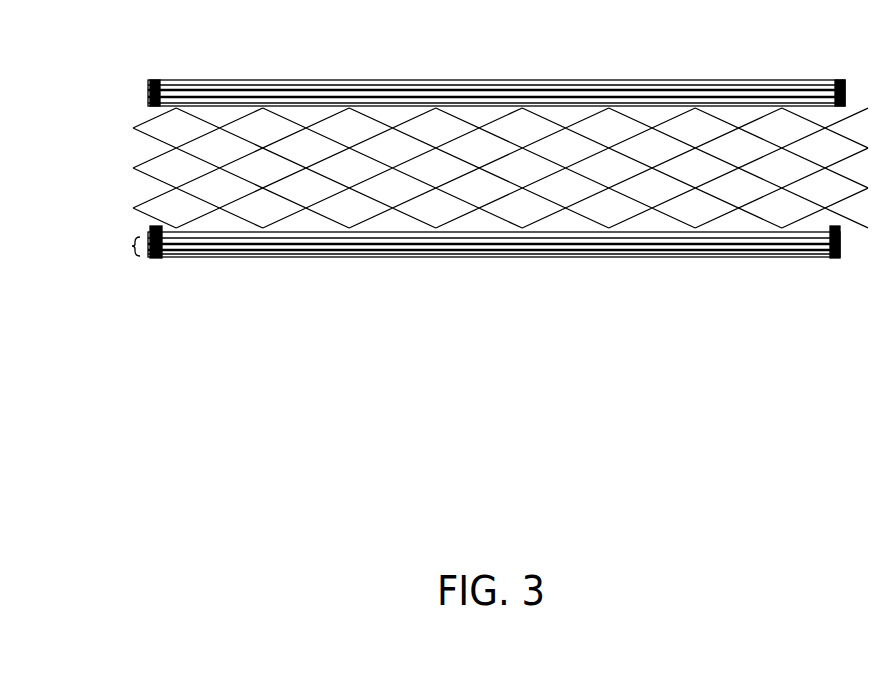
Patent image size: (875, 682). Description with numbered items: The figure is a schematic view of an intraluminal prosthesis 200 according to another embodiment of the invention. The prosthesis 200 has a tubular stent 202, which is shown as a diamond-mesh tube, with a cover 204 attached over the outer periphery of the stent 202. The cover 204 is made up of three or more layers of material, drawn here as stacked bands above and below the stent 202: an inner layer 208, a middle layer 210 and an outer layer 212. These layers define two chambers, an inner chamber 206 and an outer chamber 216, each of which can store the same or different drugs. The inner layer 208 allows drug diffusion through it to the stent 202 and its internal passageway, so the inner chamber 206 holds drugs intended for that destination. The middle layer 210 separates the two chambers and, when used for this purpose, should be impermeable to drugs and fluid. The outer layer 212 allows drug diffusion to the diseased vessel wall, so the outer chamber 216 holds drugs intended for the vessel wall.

The prosthesis 200 is at (456, 184).
The tubular stent 202 is at (141, 174).
The cover 204 is at (446, 256).
The inner chamber 206 is at (509, 235).
The inner layer 208 is at (299, 231).
The middle layer 210 is at (683, 99).
The outer layer 212 is at (496, 62).
The outer chamber 216 is at (773, 246).